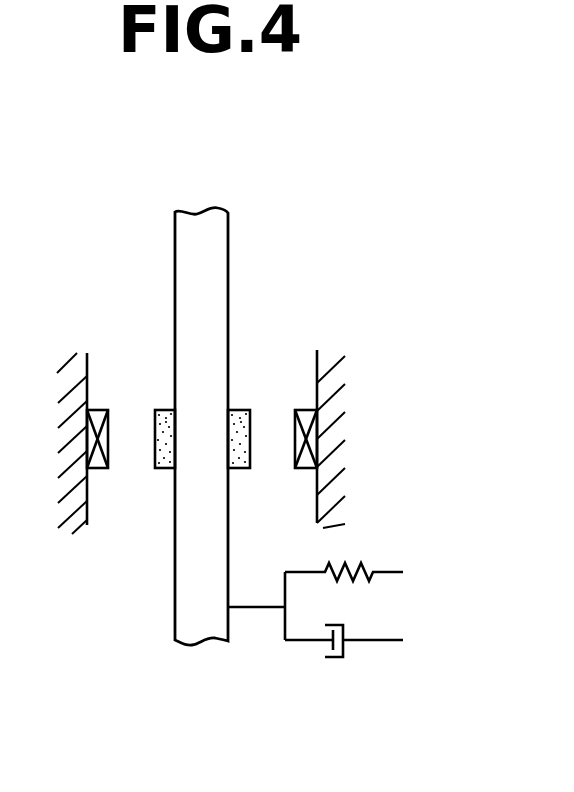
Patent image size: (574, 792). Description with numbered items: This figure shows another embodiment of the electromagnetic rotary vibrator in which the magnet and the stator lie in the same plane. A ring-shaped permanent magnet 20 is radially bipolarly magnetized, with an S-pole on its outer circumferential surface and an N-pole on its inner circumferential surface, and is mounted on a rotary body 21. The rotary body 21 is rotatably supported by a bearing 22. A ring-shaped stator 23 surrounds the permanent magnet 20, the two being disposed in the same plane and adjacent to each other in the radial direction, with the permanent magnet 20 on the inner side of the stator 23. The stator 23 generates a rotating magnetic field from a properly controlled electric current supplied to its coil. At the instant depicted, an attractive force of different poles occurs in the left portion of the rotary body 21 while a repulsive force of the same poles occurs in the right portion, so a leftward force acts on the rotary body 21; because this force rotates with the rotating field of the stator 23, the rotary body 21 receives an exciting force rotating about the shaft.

The permanent magnet 20 is at (237, 412).
The rotary body 21 is at (219, 242).
The bearing 22 is at (366, 595).
The stator 23 is at (305, 418).